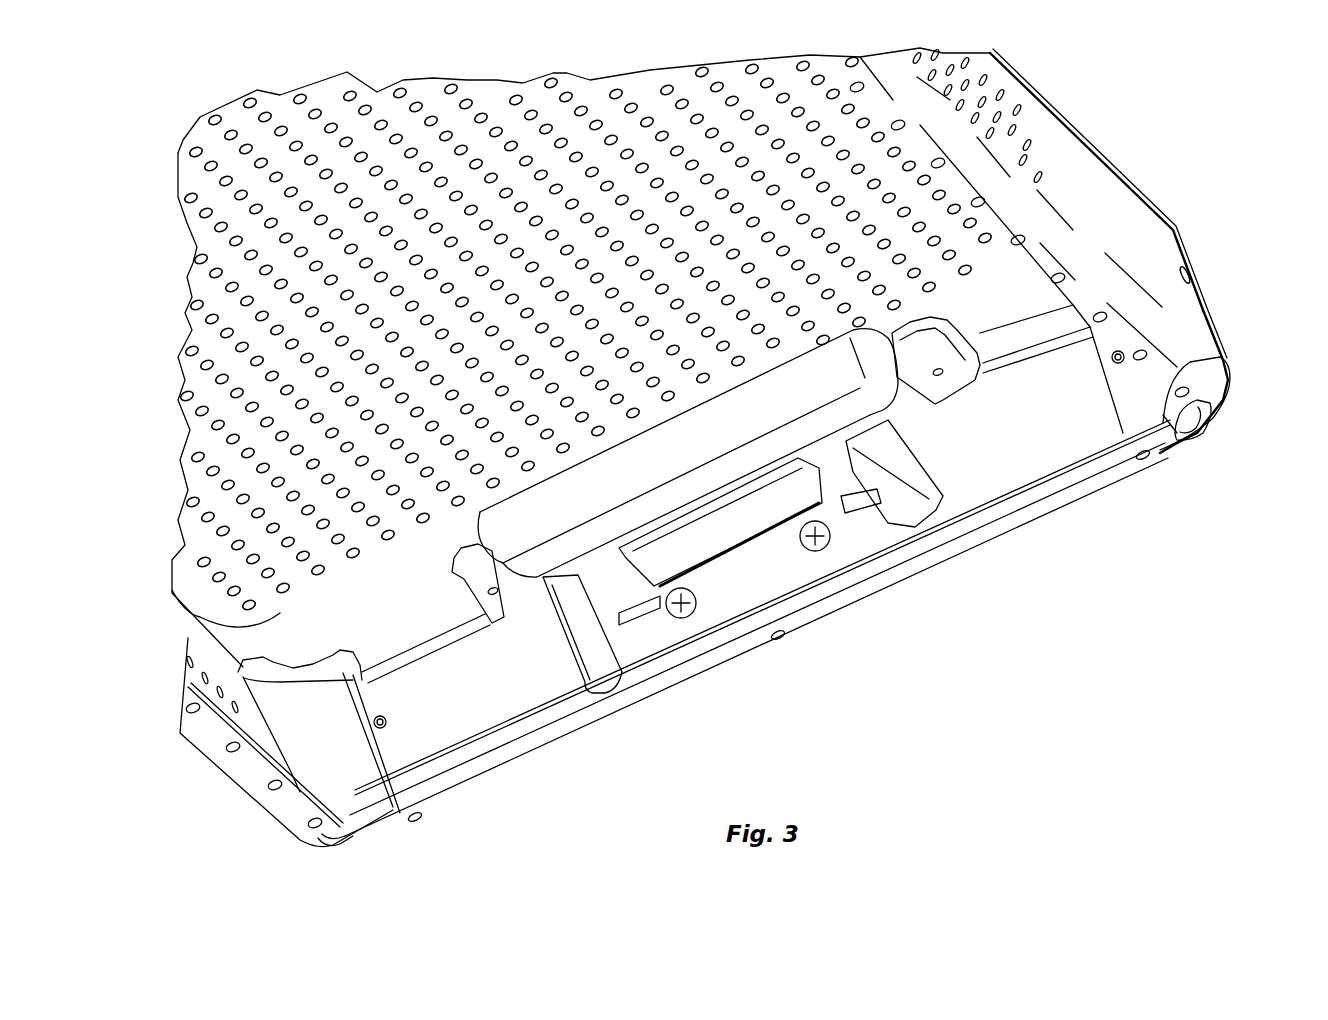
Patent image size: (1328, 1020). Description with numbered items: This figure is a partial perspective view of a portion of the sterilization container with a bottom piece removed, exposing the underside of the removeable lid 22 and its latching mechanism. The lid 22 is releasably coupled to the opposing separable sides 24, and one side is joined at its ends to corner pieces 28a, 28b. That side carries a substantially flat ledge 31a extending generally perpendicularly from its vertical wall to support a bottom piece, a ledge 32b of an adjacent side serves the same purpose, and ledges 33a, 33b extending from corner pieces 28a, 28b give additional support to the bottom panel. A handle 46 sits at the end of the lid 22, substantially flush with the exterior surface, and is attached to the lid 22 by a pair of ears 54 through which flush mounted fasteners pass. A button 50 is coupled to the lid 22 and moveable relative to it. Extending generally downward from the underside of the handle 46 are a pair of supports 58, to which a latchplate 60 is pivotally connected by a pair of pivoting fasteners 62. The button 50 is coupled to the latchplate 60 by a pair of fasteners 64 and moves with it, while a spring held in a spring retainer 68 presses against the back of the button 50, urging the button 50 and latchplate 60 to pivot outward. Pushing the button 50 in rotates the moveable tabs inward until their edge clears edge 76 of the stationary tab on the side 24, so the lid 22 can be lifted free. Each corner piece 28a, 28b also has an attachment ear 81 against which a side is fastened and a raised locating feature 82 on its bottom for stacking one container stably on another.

The removeable lid 22 is at (172, 580).
The separable side 24 is at (1087, 388).
The corner piece 28a is at (1223, 392).
The corner piece 28b is at (323, 743).
The ledge 31a is at (1057, 500).
The ledge 32b is at (257, 770).
The ledge 33a is at (1193, 367).
The ledge 33b is at (353, 820).
The handle 46 is at (517, 490).
The button 50 is at (830, 578).
The ears 54 is at (953, 380).
The supports 58 is at (590, 637).
The latchplate 60 is at (732, 583).
The pivoting fasteners 62 is at (930, 500).
The fasteners 64 is at (828, 547).
The spring retainer 68 is at (812, 553).
The edge of stationary tab 76 is at (625, 600).
The attachment ear 81 is at (445, 790).
The raised locating feature 82 is at (1200, 440).